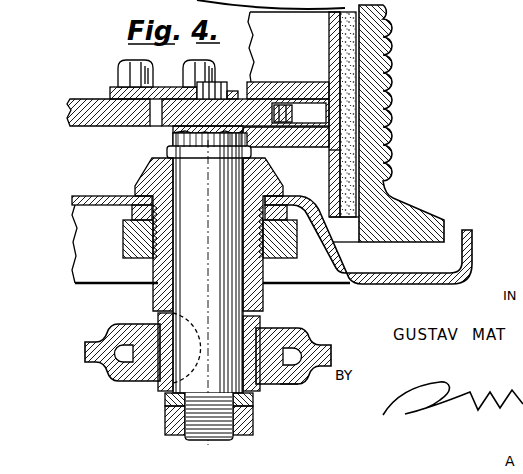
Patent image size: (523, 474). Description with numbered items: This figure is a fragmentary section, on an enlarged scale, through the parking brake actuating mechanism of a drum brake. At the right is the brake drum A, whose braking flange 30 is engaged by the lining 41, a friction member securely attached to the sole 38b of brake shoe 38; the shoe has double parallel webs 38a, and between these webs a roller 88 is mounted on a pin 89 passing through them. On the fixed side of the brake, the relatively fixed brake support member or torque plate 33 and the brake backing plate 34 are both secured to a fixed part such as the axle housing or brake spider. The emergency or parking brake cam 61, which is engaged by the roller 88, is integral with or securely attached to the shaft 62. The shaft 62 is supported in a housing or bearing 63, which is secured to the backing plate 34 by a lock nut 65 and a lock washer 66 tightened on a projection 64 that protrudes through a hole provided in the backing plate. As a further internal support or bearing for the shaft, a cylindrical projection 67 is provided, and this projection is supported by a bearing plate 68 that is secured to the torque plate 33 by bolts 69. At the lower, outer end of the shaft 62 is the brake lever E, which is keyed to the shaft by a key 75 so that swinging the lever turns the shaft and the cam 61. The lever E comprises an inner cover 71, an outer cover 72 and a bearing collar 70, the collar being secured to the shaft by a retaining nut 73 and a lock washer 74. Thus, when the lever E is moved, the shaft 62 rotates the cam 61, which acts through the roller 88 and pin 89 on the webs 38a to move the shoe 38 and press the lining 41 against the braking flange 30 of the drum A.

The braking flange 30 is at (394, 59).
The brake drum A is at (394, 20).
The torque plate 33 is at (68, 99).
The brake backing plate 34 is at (473, 244).
The brake shoe 38 is at (272, 23).
The webs of shoe 38a is at (262, 80).
The sole of shoe 38b is at (333, 188).
The lining 41 is at (347, 33).
The parking brake cam 61 is at (173, 112).
The shaft 62 is at (217, 193).
The housing or bearing 63 is at (157, 175).
The projection 64 is at (160, 238).
The lock nut 65 is at (128, 242).
The lock washer 66 is at (133, 213).
The cylindrical projection 67 is at (232, 82).
The bearing plate 68 is at (110, 90).
The bolts 69 is at (126, 62).
The bearing collar 70 is at (113, 381).
The inner cover 71 is at (302, 330).
The outer cover 72 is at (297, 383).
The retaining nut 73 is at (243, 418).
The lock washer 74 is at (163, 397).
The key 75 is at (178, 333).
The roller 88 is at (292, 113).
The pin 89 is at (282, 83).
The brake lever E is at (108, 328).